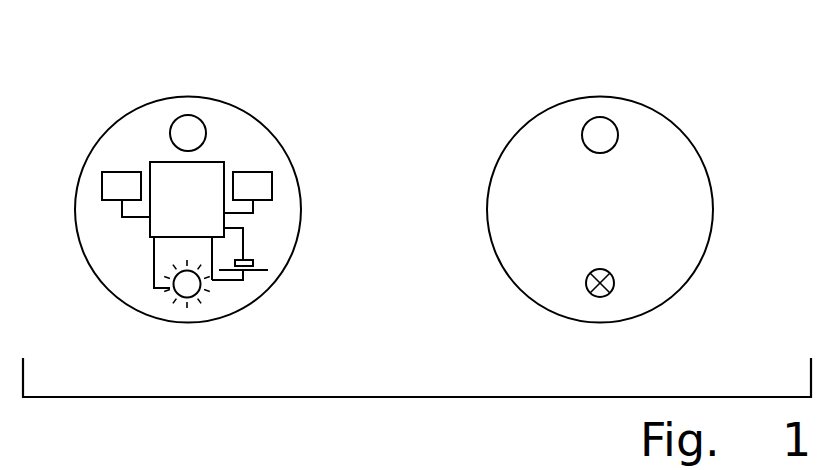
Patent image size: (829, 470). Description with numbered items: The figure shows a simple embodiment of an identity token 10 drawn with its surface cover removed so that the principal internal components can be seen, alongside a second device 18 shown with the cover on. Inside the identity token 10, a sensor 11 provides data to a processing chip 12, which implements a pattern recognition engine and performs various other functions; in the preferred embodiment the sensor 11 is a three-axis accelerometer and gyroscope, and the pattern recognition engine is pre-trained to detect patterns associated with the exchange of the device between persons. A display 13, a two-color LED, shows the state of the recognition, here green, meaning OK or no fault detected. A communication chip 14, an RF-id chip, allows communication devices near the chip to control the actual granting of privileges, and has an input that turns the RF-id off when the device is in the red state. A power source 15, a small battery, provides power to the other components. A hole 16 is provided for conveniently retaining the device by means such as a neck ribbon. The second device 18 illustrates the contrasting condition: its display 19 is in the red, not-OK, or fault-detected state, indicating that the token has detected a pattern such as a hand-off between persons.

The identity token 10 is at (202, 98).
The sensor 11 is at (125, 172).
The processing chip 12 is at (203, 162).
The display 13 is at (178, 294).
The communication chip 14 is at (272, 180).
The power source 15 is at (253, 260).
The hole 16 is at (173, 120).
The second device 18 is at (643, 102).
The display 19 is at (592, 293).